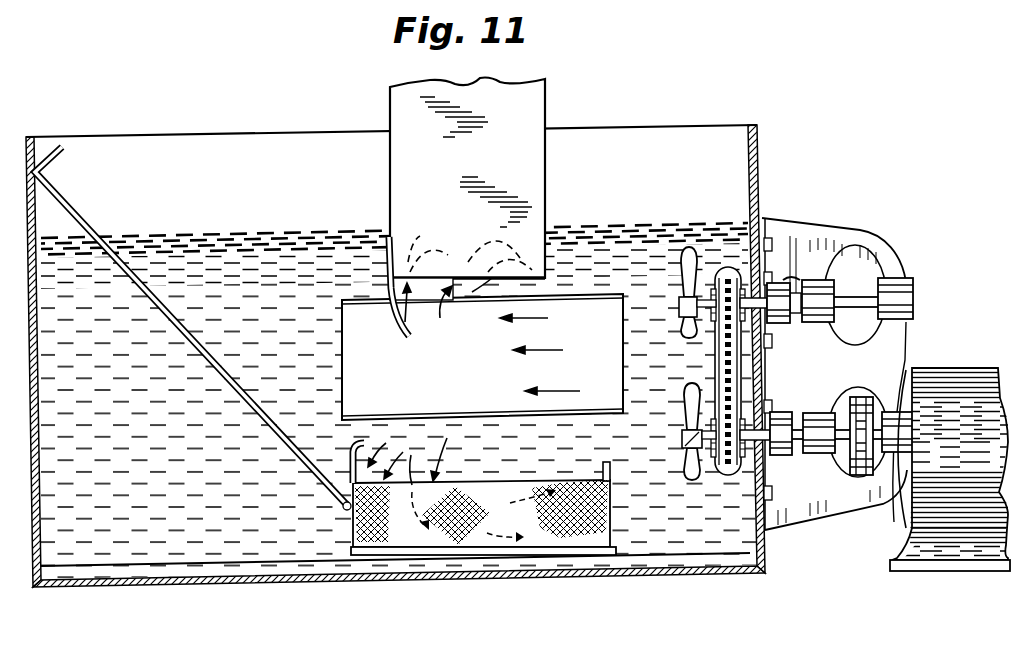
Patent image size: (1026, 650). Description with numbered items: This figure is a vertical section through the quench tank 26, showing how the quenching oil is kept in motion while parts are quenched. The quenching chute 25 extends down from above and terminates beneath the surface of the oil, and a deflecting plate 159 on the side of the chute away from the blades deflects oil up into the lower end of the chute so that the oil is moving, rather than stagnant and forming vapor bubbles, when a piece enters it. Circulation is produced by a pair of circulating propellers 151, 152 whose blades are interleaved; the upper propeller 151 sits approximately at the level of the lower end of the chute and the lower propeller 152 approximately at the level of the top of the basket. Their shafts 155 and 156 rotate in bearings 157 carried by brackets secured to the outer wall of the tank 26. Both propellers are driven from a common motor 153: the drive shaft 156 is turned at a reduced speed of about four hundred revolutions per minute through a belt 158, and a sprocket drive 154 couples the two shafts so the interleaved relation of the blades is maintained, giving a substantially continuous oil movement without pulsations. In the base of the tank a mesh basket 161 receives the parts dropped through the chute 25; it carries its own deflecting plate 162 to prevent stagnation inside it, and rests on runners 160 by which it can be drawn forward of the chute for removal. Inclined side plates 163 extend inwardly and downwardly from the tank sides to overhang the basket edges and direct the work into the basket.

The quenching chute 25 is at (540, 119).
The quench tank 26 is at (760, 178).
The circulating propeller 151 is at (688, 266).
The circulating propeller 152 is at (682, 438).
The motor 153 is at (958, 388).
The sprocket drive 154 is at (722, 360).
The shaft 155 is at (746, 302).
The drive shaft 156 is at (749, 465).
The bearings 157 is at (834, 374).
The belt 158 is at (860, 480).
The deflecting plate 159 is at (398, 320).
The runners 160 is at (679, 558).
The mesh basket 161 is at (590, 530).
The deflecting plate 162 is at (356, 447).
The inclined side plates 163 is at (362, 372).